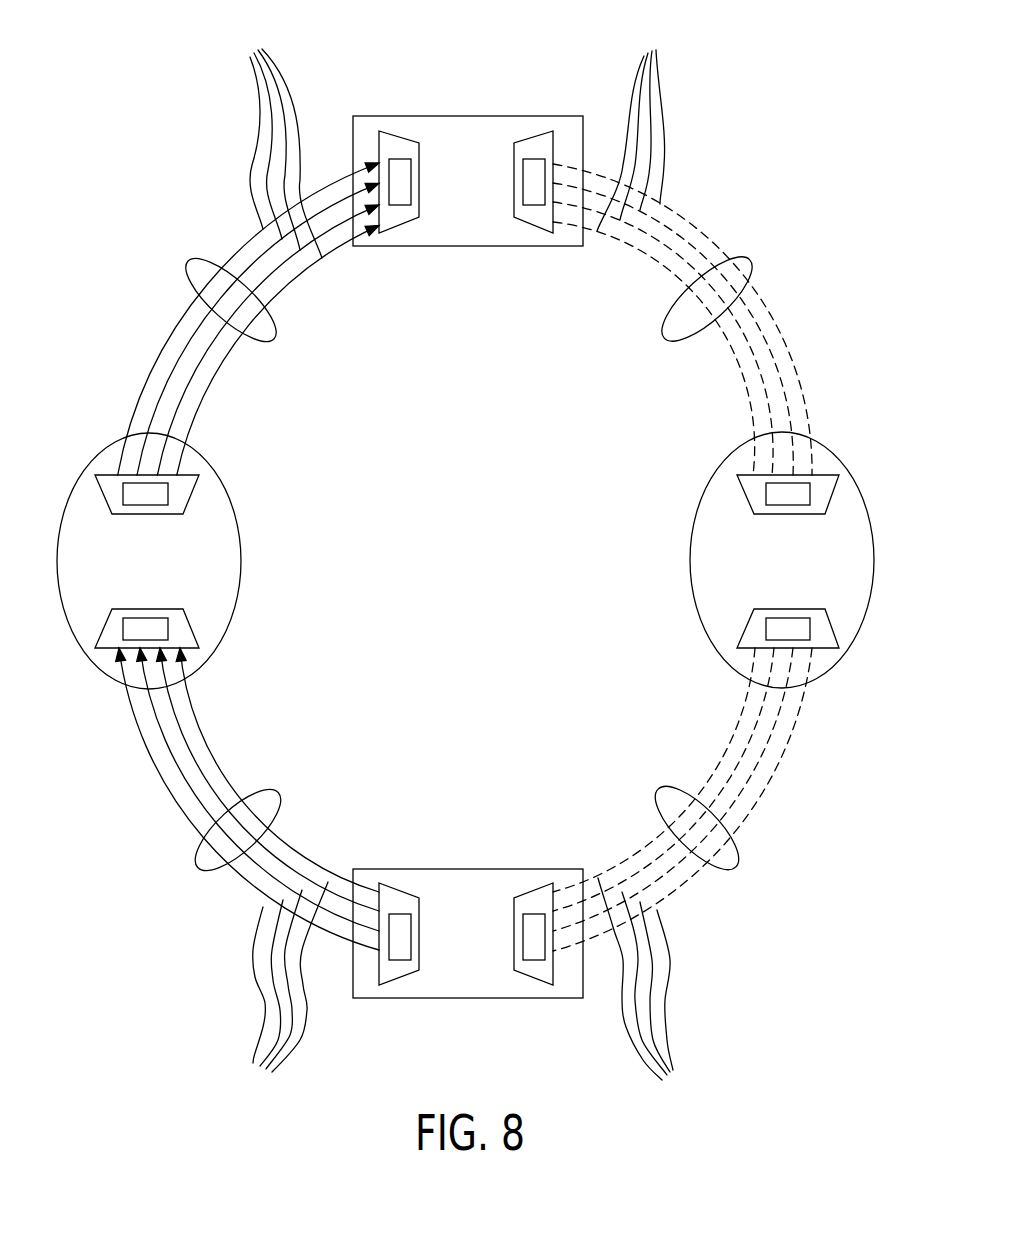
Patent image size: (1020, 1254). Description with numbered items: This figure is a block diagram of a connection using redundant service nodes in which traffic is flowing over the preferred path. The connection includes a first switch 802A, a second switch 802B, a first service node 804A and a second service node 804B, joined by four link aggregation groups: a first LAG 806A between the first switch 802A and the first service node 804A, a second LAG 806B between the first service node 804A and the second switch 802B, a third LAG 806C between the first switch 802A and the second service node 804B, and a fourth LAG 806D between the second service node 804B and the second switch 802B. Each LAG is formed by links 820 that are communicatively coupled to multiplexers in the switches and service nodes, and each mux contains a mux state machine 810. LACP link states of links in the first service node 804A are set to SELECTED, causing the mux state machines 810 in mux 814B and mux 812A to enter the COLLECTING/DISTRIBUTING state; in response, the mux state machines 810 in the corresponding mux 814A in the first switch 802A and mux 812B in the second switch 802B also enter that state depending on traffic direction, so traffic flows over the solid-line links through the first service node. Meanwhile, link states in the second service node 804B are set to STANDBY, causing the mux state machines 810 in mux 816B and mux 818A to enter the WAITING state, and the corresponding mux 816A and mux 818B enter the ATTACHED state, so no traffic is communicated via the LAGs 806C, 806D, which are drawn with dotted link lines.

The first switch 802A is at (470, 869).
The second switch 802B is at (470, 116).
The first service node 804A is at (243, 570).
The second service node 804B is at (690, 568).
The first LAG 806A is at (197, 868).
The second LAG 806B is at (192, 262).
The third LAG 806C is at (737, 868).
The fourth LAG 806D is at (750, 260).
The mux state machine 810 is at (400, 158).
The mux in the first service node 812A is at (192, 495).
The mux in the second switch 812B is at (396, 222).
The mux in the first switch 814A is at (400, 883).
The mux in the first service node 814B is at (190, 628).
The mux in the first switch 816A is at (537, 883).
The mux in the second service node 816B is at (752, 628).
The mux in the second service node 818A is at (758, 492).
The mux in the second switch 818B is at (535, 222).
The links 820 is at (463, 566).